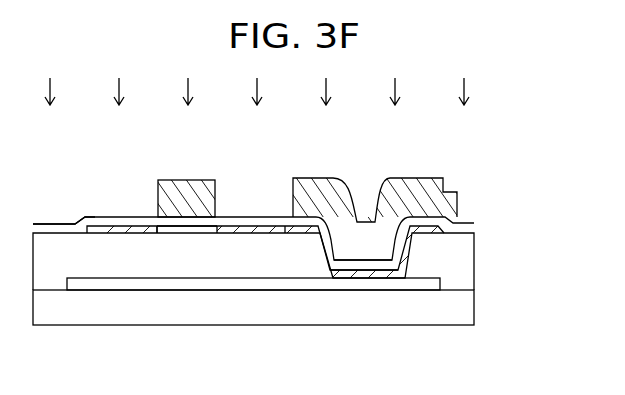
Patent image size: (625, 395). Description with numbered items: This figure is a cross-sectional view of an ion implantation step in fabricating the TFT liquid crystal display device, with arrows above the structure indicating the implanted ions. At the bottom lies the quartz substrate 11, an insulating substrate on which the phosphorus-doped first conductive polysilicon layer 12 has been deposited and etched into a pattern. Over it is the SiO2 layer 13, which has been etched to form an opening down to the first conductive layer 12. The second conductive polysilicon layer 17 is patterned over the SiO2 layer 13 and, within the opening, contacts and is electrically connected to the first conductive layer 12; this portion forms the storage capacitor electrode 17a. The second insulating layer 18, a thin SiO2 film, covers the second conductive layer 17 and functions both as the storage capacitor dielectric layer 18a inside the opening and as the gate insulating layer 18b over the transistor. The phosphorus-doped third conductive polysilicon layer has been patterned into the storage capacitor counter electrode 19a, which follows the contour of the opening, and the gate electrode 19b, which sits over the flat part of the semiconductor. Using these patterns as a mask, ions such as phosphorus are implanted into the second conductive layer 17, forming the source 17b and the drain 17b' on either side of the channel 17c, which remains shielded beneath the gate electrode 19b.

The quartz substrate 11 is at (465, 317).
The polysilicon layer (first conductive layer) 12 is at (433, 287).
The SiO2 layer 13 is at (465, 246).
The polysilicon layer (second conductive layer) 17 is at (406, 258).
The storage capacitor electrode 17a is at (331, 278).
The source 17b is at (133, 222).
The drain 17b' is at (241, 222).
The channel 17c is at (181, 233).
The SiO2 film (second insulating layer) 18 is at (460, 230).
The storage capacitor dielectric layer 18a is at (373, 268).
The gate insulating layer 18b is at (85, 217).
The storage capacitor counter electrode 19a is at (440, 203).
The gate electrode 19b is at (177, 180).